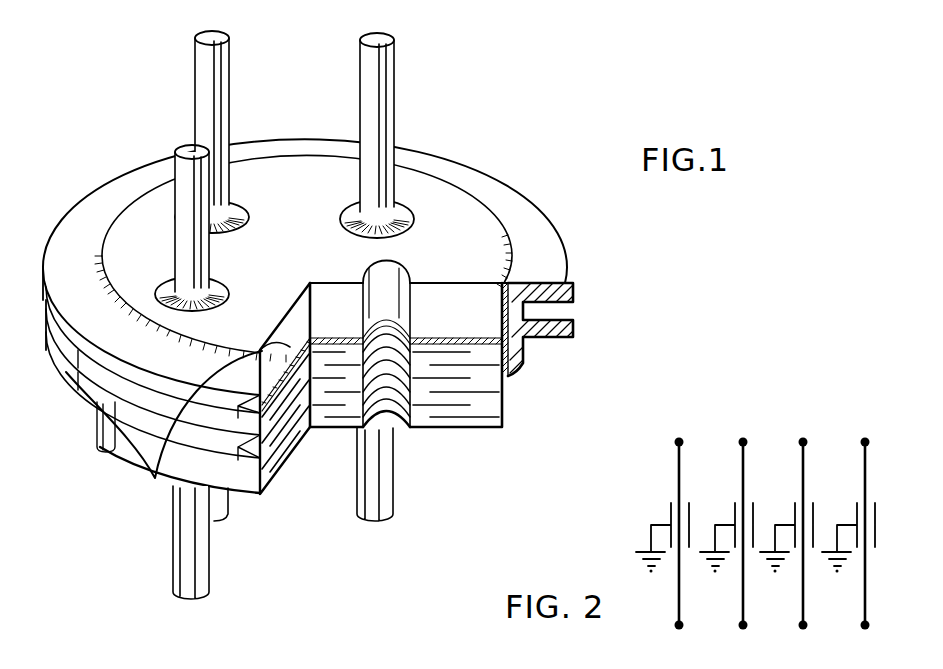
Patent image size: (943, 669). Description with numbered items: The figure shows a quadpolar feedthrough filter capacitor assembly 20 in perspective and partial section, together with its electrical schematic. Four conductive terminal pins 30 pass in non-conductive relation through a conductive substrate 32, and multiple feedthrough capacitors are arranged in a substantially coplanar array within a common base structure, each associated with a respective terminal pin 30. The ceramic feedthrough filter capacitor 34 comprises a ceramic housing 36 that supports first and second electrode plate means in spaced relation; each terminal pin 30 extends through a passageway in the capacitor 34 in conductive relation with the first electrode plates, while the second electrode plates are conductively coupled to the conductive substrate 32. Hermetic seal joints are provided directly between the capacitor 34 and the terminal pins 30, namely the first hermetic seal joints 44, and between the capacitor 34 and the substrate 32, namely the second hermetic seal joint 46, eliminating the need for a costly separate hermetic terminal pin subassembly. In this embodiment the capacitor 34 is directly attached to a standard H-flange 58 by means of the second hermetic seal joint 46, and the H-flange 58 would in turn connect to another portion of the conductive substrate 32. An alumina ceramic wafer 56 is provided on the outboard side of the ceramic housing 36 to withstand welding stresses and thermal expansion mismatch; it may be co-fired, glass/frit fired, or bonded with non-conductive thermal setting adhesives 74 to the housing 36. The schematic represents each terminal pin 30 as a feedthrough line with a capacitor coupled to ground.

In FIG. 1, the feedthrough filter capacitor assembly 20 is at (475, 129).
In FIG. 1, the conductive terminal pin 30 is at (230, 53).
In FIG. 2, the conductive terminal pin 30 is at (679, 466).
In FIG. 1, the conductive substrate 32 is at (74, 389).
In FIG. 1, the ceramic feedthrough filter capacitor 34 is at (465, 433).
In FIG. 1, the ceramic housing 36 is at (503, 416).
In FIG. 1, the first hermetic seal joint 44 is at (165, 281).
In FIG. 1, the second hermetic seal joint 46 is at (507, 282).
In FIG. 1, the alumina ceramic wafer 56 is at (291, 298).
In FIG. 1, the H-flange 58 is at (573, 290).
In FIG. 1, the non-conductive thermal setting adhesives 74 is at (465, 340).